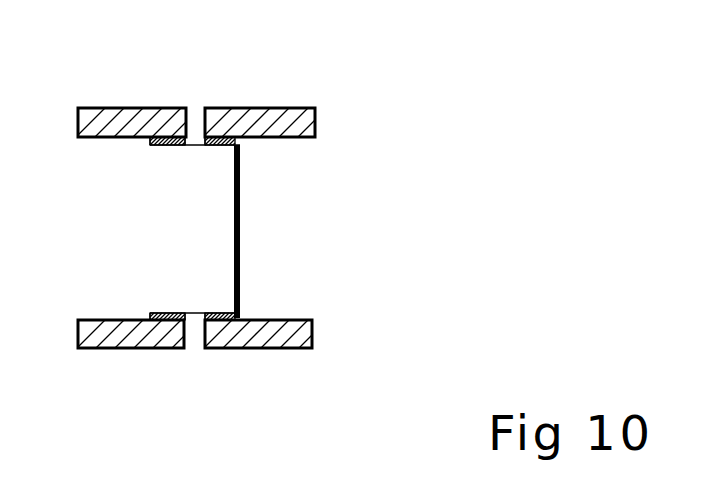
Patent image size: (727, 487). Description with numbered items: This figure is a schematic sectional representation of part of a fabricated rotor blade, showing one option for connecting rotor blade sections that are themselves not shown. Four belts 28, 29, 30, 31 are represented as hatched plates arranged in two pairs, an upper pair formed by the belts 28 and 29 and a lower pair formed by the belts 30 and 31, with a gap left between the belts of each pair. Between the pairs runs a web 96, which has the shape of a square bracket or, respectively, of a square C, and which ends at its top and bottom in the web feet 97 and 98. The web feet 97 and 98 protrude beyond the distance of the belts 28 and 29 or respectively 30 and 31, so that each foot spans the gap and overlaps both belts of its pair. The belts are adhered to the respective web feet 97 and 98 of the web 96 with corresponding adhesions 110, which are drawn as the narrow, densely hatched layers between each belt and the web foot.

The belt 28 is at (160, 112).
The belt 29 is at (282, 115).
The belt 30 is at (156, 343).
The belt 31 is at (258, 343).
The web 96 is at (242, 219).
The web foot 97 is at (197, 148).
The web foot 98 is at (196, 316).
The adhesion 110 is at (162, 146).